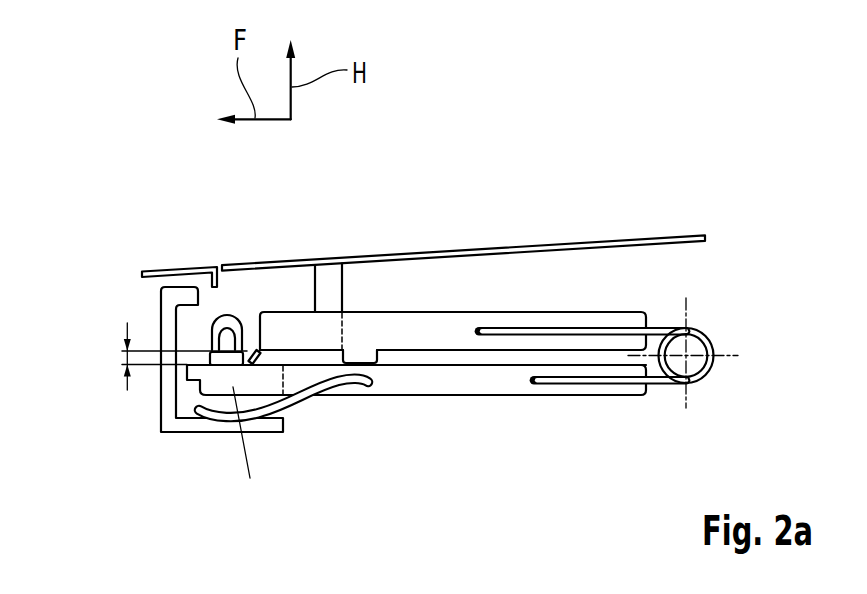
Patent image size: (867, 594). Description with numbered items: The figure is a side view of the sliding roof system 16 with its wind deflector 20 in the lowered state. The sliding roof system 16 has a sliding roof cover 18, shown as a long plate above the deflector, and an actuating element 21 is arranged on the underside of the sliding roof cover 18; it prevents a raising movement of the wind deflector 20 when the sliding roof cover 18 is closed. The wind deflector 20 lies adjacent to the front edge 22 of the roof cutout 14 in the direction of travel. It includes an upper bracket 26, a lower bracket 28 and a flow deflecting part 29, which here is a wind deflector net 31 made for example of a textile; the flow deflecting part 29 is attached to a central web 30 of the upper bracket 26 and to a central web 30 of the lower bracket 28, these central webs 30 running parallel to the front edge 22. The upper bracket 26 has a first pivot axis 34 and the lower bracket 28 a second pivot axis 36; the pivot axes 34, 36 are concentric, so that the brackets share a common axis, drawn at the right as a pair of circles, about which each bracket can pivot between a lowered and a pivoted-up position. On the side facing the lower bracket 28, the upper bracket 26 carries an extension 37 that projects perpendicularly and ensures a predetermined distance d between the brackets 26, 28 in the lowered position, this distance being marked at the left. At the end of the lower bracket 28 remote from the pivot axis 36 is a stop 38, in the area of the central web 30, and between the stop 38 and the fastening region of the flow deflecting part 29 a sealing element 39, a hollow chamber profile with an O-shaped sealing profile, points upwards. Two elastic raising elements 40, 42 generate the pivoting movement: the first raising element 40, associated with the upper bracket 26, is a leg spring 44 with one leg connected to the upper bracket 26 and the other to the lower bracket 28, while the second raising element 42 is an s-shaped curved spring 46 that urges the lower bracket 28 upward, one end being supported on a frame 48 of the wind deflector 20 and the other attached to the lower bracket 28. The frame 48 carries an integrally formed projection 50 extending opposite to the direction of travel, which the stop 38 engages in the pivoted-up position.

The roof cutout 14 is at (142, 154).
The sliding roof system 16 is at (671, 120).
The sliding roof cover 18 is at (566, 242).
The wind deflector 20 is at (545, 156).
The actuating element 21 is at (333, 292).
The front edge 22 is at (150, 268).
The upper bracket 26 is at (453, 323).
The lower bracket 28 is at (410, 382).
The flow deflecting part 29 is at (250, 261).
The central web 30 is at (292, 322).
The wind deflector net 31 is at (250, 346).
The first pivot axis 34 is at (704, 334).
The second pivot axis 36 is at (690, 348).
The extension 37 is at (368, 355).
The stop 38 is at (187, 381).
The sealing element 39 is at (232, 320).
The first raising element 40 is at (704, 283).
The second raising element 42 is at (283, 446).
The spring 44 is at (655, 328).
The s-shaped curved spring 46 is at (289, 397).
The frame 48 is at (170, 389).
The projection 50 is at (182, 298).
The predetermined distance d is at (122, 360).